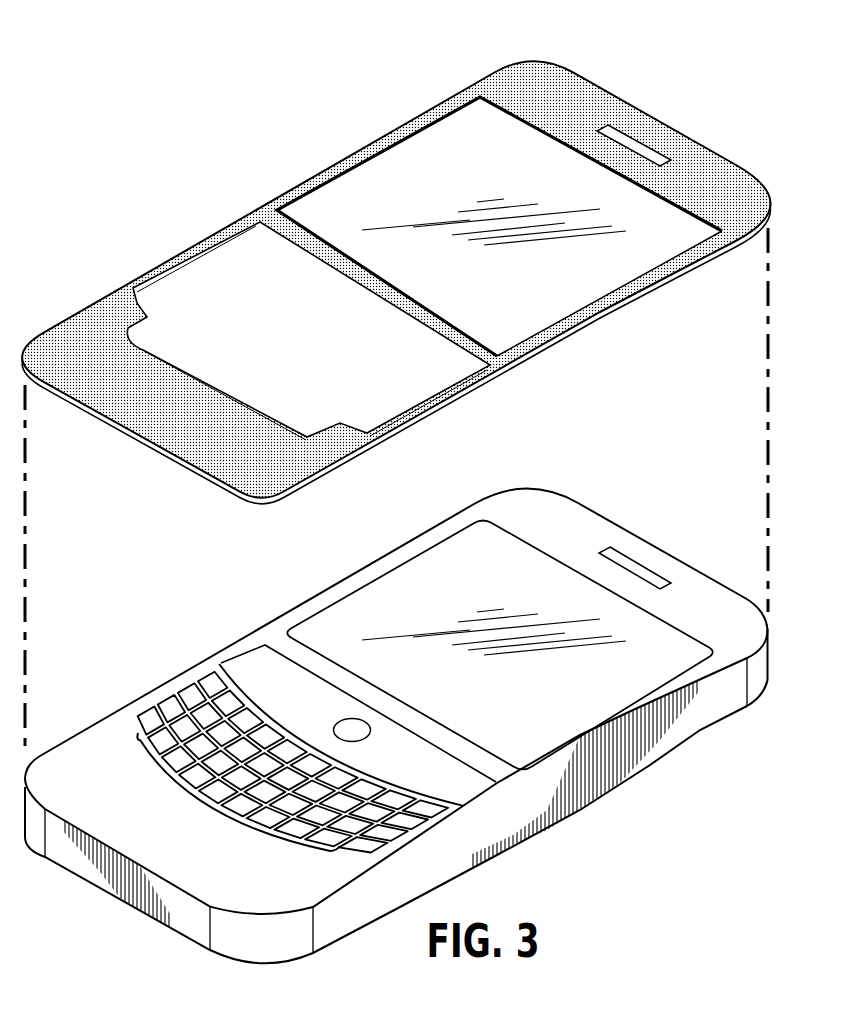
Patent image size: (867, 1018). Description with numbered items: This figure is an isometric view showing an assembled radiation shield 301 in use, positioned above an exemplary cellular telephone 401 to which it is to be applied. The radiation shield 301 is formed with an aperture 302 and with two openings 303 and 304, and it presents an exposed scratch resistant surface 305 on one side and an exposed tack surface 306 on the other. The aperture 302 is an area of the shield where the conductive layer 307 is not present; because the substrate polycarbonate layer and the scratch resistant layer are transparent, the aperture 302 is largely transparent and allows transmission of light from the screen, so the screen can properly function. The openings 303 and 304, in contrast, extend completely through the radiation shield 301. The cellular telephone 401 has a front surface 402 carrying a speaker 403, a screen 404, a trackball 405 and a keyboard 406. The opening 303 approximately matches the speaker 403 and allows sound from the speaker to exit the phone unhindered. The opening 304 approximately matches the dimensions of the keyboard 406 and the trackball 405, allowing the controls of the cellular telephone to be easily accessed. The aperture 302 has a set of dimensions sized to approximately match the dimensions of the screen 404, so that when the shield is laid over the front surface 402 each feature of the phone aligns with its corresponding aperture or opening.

The radiation shield 301 is at (715, 152).
The aperture 302 is at (360, 168).
The opening 303 is at (634, 147).
The opening 304 is at (180, 274).
The scratch resistant surface 305 is at (556, 79).
The tack surface 306 is at (158, 458).
The conductive layer 307 is at (198, 405).
The cellular telephone 401 is at (705, 727).
The front surface 402 is at (557, 503).
The speaker 403 is at (627, 563).
The screen 404 is at (403, 578).
The trackball 405 is at (372, 726).
The keyboard 406 is at (187, 700).